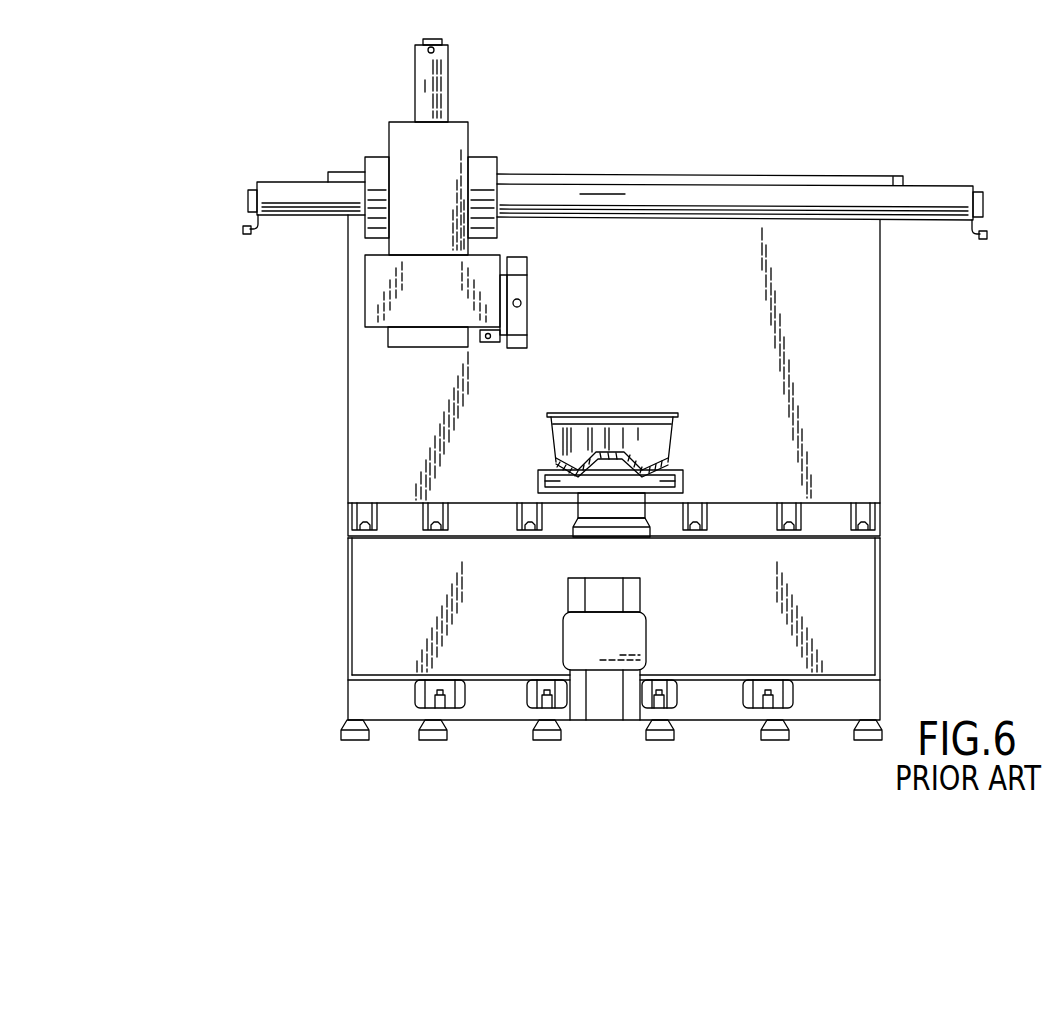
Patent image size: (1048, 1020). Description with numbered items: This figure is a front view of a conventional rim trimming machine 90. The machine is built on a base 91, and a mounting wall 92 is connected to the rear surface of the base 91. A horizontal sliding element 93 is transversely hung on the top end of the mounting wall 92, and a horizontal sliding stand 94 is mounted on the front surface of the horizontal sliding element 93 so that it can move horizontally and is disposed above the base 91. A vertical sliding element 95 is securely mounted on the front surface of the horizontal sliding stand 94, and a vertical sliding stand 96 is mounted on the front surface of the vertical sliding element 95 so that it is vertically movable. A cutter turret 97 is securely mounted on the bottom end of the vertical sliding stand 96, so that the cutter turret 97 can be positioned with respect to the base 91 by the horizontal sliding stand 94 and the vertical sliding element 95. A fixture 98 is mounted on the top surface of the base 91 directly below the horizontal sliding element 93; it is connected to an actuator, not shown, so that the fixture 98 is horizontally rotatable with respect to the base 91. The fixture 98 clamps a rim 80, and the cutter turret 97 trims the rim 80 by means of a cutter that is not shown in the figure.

The conventional rim trimming machine 90 is at (207, 400).
The base 91 is at (352, 602).
The mounting wall 92 is at (341, 452).
The horizontal sliding element 93 is at (622, 192).
The horizontal sliding stand 94 is at (485, 150).
The vertical sliding element 95 is at (407, 78).
The vertical sliding stand 96 is at (383, 145).
The cutter turret 97 is at (358, 290).
The fixture 98 is at (690, 482).
The rim 80 is at (545, 437).